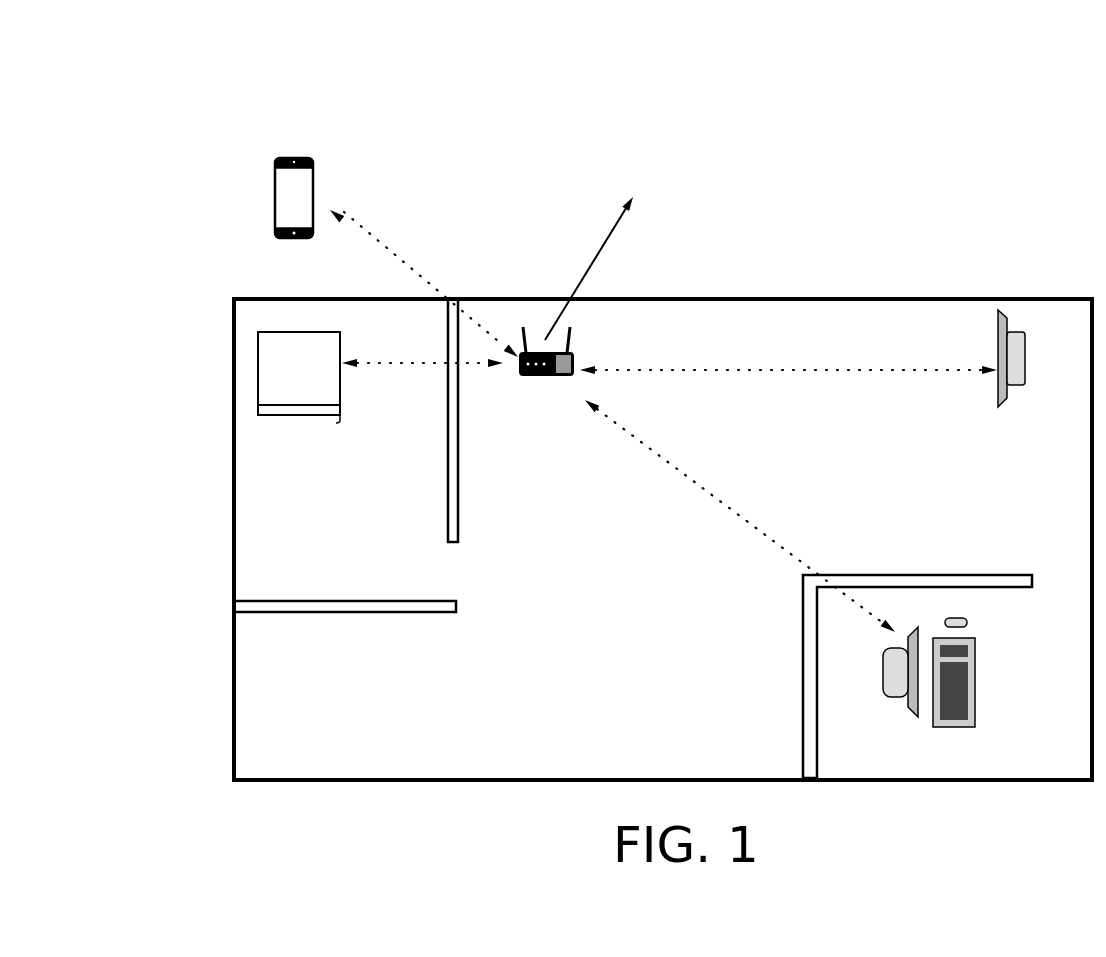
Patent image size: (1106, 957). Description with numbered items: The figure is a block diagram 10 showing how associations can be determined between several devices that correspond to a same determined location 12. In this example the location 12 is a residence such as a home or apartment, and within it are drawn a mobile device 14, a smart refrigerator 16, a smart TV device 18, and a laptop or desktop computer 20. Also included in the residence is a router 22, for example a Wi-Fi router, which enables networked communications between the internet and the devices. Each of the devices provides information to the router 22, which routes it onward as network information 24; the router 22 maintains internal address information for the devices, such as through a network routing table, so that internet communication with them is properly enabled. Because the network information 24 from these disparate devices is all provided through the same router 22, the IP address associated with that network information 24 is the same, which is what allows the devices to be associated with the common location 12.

The block diagram 10 is at (207, 72).
The location 12 is at (663, 539).
The mobile device 14 is at (300, 215).
The smart refrigerator 16 is at (299, 394).
The smart TV device 18 is at (1019, 378).
The laptop or desktop computer 20 is at (939, 687).
The router 22 is at (663, 421).
The network information 24 is at (654, 268).